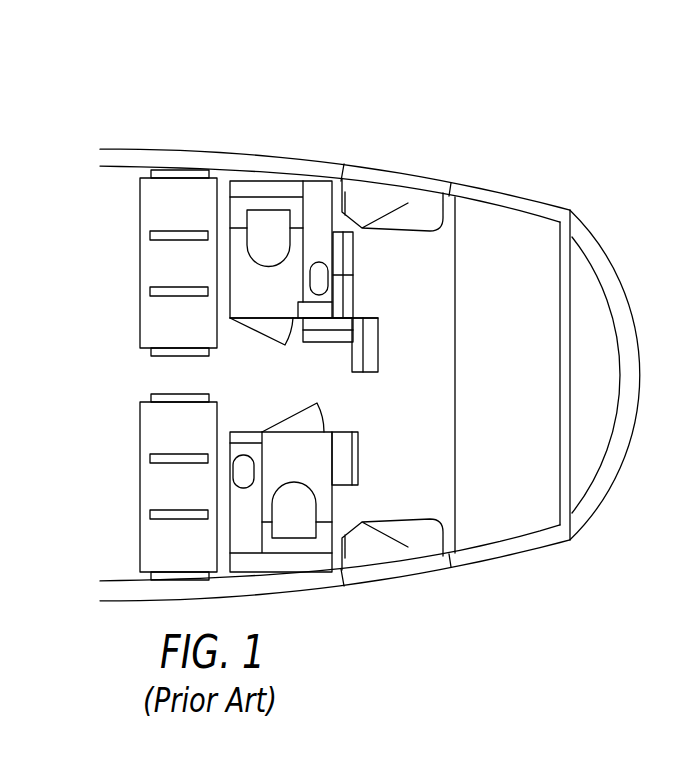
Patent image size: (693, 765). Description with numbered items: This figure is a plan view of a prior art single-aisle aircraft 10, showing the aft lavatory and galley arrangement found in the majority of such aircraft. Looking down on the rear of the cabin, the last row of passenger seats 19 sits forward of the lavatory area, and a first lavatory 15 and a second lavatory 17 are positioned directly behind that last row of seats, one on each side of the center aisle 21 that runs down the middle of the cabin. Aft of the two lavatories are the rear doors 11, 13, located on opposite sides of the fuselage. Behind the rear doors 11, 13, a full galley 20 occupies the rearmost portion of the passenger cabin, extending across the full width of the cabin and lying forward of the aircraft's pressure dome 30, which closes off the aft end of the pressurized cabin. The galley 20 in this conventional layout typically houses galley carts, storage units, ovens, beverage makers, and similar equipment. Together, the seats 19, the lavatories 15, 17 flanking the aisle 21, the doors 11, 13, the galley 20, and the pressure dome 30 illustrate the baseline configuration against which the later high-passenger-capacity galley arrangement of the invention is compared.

The aircraft 10 is at (406, 122).
The rear door 11 is at (415, 180).
The rear door 13 is at (382, 572).
The first lavatory 15 is at (317, 190).
The second lavatory 17 is at (315, 558).
The last row of passenger seats 19 is at (170, 200).
The full galley 20 is at (510, 243).
The center aisle 21 is at (270, 395).
The pressure dome 30 is at (592, 460).